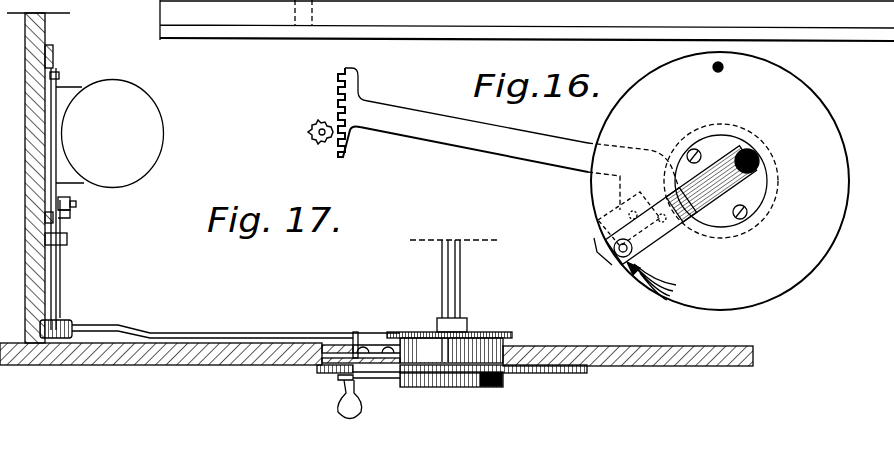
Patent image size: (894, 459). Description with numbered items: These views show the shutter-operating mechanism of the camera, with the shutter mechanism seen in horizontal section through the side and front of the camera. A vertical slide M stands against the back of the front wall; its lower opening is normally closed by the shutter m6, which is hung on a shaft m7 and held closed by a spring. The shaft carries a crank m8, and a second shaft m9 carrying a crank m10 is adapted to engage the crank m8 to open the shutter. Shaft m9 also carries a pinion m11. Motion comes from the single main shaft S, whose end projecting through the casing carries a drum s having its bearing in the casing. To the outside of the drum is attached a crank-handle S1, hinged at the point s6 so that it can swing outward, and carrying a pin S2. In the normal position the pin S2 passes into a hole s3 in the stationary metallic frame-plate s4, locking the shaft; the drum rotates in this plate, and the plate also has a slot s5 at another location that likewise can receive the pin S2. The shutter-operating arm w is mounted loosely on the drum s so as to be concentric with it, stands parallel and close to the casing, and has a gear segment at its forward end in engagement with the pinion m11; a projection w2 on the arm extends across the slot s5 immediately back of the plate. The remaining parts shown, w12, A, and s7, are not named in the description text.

In FIG. 17, the vertical slide M is at (40, 148).
In FIG. 17, the shutter m6 is at (110, 134).
In FIG. 17, the shaft m7 is at (60, 75).
In FIG. 17, the crank m8 is at (74, 211).
In FIG. 17, the shaft m9 is at (62, 260).
In FIG. 17, the crank m10 is at (76, 203).
In FIG. 17, the pinion m11 is at (76, 322).
In FIG. 16, the pinion m11 is at (300, 133).
In FIG. 17, the arm w is at (235, 322).
In FIG. 16, the arm w is at (577, 168).
In FIG. 17, the projection w2 is at (358, 320).
In FIG. 16, the projection w2 is at (360, 91).
In FIG. 16, the rack end w12 is at (596, 249).
In FIG. 17, the base plate A is at (252, 365).
In FIG. 17, the main shaft S is at (462, 284).
In FIG. 17, the drum s is at (483, 332).
In FIG. 17, the crank-handle S1 is at (391, 386).
In FIG. 17, the pin S2 is at (344, 378).
In FIG. 16, the hole s3 is at (724, 67).
In FIG. 16, the frame-plate s4 is at (838, 163).
In FIG. 16, the slot s5 is at (637, 274).
In FIG. 16, the hinge point s6 is at (676, 194).
In FIG. 16, the screw s7 is at (640, 252).